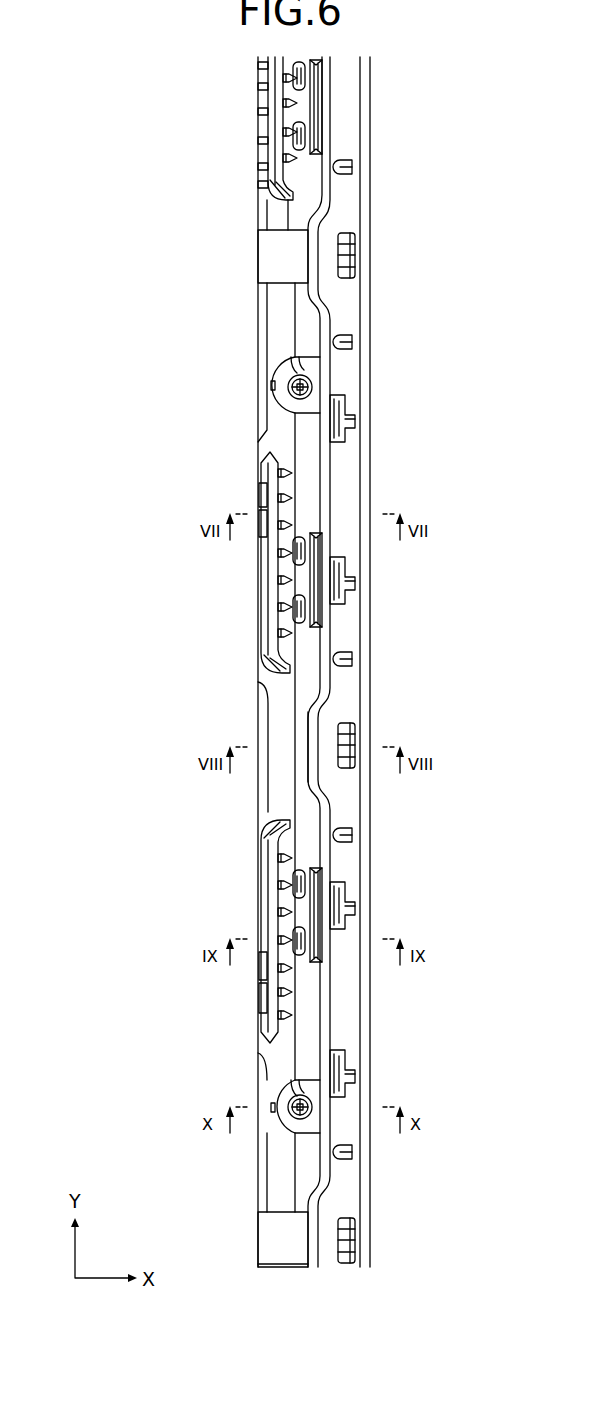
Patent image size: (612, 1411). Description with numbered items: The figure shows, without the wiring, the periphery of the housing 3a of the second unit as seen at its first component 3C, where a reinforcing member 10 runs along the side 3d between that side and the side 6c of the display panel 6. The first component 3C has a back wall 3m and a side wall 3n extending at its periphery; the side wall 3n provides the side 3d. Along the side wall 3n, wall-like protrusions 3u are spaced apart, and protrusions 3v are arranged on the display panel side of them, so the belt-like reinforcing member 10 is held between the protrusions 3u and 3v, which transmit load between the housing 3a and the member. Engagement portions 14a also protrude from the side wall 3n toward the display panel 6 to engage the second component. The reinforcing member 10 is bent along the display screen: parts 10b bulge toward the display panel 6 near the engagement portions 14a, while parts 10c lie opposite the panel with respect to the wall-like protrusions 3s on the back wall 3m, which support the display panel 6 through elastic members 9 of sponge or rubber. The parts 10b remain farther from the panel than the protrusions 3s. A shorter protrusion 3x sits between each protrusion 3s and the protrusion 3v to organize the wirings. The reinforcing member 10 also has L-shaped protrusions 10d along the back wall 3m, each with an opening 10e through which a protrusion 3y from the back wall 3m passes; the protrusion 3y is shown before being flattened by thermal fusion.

The reinforcing member 10 is at (332, 82).
The parts 10b is at (306, 253).
The parts 10c is at (327, 103).
The protrusion 10d is at (287, 402).
The opening 10e is at (297, 372).
The engagement portion 14a is at (352, 251).
The protrusion 3s is at (270, 98).
The protrusion 3v is at (318, 122).
The protrusion 3x is at (302, 136).
The protrusion 3u is at (347, 567).
The protrusion 3y is at (313, 385).
The back wall 3m is at (275, 306).
The first component 3C is at (419, 662).
The housing 3a is at (372, 317).
The side 3d is at (403, 746).
The side wall 3n is at (363, 433).
The elastic member 9 is at (262, 597).
The side 6c is at (361, 747).
The display panel 6 is at (260, 702).